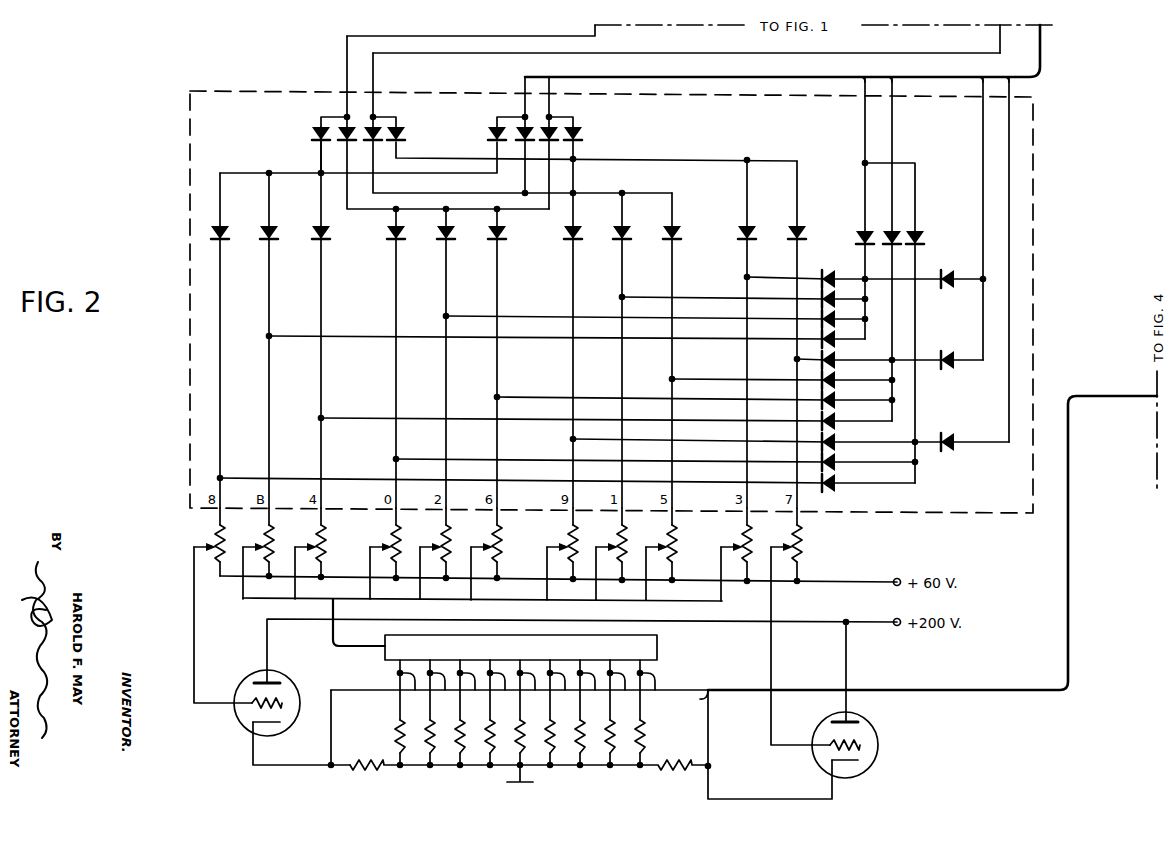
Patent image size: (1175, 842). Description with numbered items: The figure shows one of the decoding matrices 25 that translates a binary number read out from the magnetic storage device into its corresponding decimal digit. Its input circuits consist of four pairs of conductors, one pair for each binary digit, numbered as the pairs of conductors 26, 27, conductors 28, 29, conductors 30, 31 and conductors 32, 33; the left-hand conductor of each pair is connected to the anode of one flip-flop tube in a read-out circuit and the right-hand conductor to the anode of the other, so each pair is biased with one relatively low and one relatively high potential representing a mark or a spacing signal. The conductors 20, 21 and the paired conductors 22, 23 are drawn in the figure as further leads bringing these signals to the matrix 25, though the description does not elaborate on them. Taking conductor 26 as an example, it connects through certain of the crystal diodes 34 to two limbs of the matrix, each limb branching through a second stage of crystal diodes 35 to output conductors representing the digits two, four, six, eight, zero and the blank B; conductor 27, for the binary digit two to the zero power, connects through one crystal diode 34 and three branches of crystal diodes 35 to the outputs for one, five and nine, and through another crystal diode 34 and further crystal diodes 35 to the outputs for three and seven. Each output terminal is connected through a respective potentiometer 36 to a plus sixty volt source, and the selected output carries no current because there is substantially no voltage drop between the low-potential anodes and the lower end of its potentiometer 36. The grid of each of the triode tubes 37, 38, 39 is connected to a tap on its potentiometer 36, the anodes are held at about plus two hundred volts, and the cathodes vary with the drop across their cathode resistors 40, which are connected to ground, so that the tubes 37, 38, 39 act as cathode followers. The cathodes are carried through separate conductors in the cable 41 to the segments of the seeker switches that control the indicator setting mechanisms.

The input conductor 20 is at (448, 122).
The input conductor 21 is at (782, 51).
The pair of input conductors 22 is at (876, 70).
The pair of input conductors 23 is at (993, 70).
The matrix 25 is at (229, 88).
The input conductor 26 is at (347, 50).
The input conductor 27 is at (392, 53).
The input circuit conductor 28 is at (525, 100).
The input circuit conductor 29 is at (549, 100).
The input circuit conductor 30 is at (865, 118).
The input circuit conductor 31 is at (892, 118).
The input circuit conductor 32 is at (983, 120).
The input circuit conductor 33 is at (1009, 125).
The crystal diodes 34 is at (351, 127).
The crystal diodes 35 is at (391, 239).
The potentiometers 36 is at (221, 544).
The triode tube 37 is at (256, 672).
The triode tubes 38 is at (657, 658).
The triode tube 39 is at (872, 727).
The cathode resistors 40 is at (381, 738).
The cable 41 is at (995, 690).